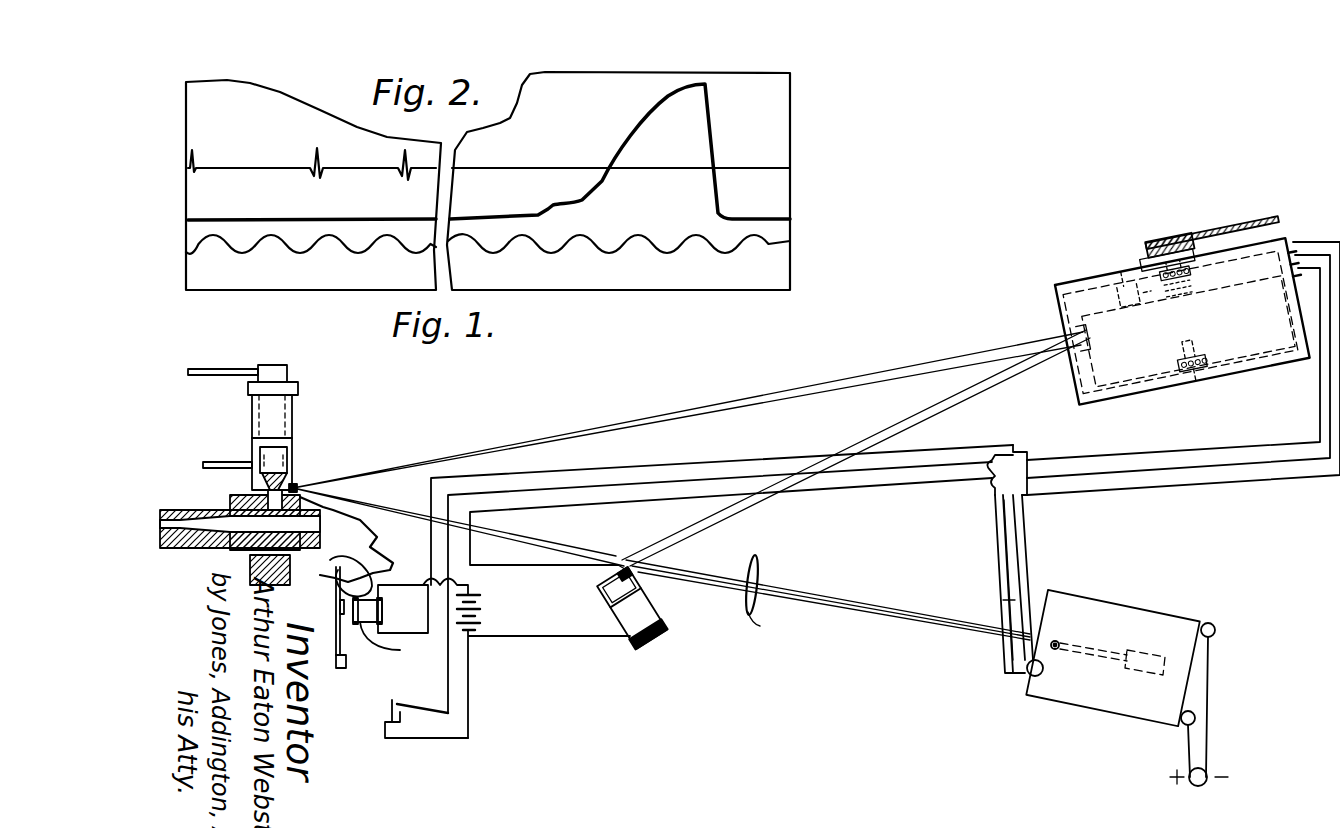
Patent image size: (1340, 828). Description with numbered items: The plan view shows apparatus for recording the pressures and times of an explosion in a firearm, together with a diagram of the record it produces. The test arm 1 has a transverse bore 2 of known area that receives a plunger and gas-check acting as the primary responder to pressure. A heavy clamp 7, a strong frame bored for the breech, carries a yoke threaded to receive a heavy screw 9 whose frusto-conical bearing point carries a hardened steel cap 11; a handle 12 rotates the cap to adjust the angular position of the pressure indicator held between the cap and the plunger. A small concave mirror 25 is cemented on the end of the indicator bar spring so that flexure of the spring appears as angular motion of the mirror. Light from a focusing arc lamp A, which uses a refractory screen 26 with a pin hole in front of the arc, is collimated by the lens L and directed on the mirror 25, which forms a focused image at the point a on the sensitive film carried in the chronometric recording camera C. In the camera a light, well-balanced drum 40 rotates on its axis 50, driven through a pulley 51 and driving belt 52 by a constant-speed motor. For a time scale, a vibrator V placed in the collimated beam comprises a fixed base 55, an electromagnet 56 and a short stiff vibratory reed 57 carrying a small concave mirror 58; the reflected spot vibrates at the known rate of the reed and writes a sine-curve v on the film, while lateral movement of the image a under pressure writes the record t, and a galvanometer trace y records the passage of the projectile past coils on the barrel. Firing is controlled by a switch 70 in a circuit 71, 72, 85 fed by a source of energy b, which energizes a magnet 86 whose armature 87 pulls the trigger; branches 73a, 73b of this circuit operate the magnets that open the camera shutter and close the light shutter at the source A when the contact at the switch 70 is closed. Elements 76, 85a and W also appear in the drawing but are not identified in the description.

In FIG. 1, the test arm 1 is at (177, 510).
In FIG. 1, the transverse bore 2 is at (232, 501).
In FIG. 1, the heavy clamp 7 is at (292, 426).
In FIG. 1, the heavy screw 9 is at (287, 368).
In FIG. 1, the hardened steel cap 11 is at (289, 468).
In FIG. 1, the handle 12 is at (219, 458).
In FIG. 1, the concave mirror 25 is at (297, 488).
In FIG. 1, the refractory screen 26 is at (1058, 640).
In FIG. 1, the drum 40 is at (1262, 327).
In FIG. 1, the axis 50 is at (1197, 377).
In FIG. 1, the pulley 51 is at (1158, 248).
In FIG. 1, the driving belt 52 is at (1258, 216).
In FIG. 1, the fixed base 55 is at (644, 600).
In FIG. 1, the electromagnet 56 is at (640, 612).
In FIG. 1, the vibratory reed 57 is at (612, 598).
In FIG. 1, the small concave mirror 58 is at (622, 560).
In FIG. 1, the switch 70 is at (390, 706).
In FIG. 1, the circuit conductor 71 is at (588, 478).
In FIG. 1, the circuit conductor 72 is at (588, 505).
In FIG. 1, the circuit branch 73a is at (1080, 468).
In FIG. 1, the circuit branch 73b is at (1000, 597).
In FIG. 1, the relay element 76 is at (1120, 280).
In FIG. 1, the circuit conductor 85 is at (1197, 486).
In FIG. 1, the conductor 85a is at (1028, 528).
In FIG. 1, the magnet 86 is at (403, 646).
In FIG. 1, the armature 87 is at (346, 657).
In FIG. 1, the focusing arc lamp A is at (1127, 667).
In FIG. 1, the chronometric recording camera C is at (1156, 302).
In FIG. 1, the collimator lens L is at (765, 619).
In FIG. 1, the vibrator V is at (700, 588).
In FIG. 1, the image point a is at (1080, 333).
In FIG. 1, the source of energy b is at (482, 609).
In FIG. 2, the record t is at (793, 216).
In FIG. 1, the record t is at (328, 576).
In FIG. 2, the record strip W is at (768, 137).
In FIG. 2, the trace y is at (792, 171).
In FIG. 2, the sine-curve mark v is at (793, 245).